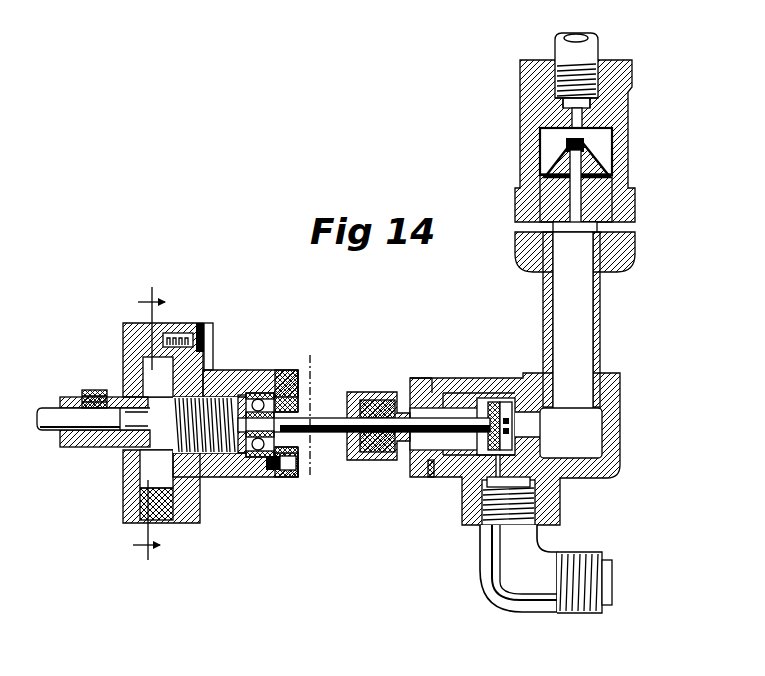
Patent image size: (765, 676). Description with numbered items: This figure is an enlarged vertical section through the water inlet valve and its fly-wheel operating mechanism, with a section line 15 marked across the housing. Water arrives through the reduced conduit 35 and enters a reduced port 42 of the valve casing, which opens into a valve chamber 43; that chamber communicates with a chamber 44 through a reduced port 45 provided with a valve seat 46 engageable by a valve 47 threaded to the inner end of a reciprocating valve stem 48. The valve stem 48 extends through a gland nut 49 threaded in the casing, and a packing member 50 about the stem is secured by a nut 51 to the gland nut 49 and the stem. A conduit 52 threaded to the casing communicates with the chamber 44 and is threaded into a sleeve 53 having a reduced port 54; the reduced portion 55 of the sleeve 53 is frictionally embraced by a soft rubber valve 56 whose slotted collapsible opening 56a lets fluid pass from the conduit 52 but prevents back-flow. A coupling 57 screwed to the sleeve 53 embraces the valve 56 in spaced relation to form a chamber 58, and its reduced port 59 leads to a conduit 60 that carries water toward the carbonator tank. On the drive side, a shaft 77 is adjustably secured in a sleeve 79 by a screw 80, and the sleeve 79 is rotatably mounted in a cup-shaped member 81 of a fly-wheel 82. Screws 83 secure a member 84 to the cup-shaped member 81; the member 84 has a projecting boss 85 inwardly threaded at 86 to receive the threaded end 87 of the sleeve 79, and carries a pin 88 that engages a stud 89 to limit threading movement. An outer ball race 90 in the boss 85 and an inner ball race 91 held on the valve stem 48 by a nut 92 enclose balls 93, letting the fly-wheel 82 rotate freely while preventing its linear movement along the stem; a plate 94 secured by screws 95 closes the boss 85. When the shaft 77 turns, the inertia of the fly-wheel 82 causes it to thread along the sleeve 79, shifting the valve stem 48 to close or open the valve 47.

The section line 15- 15 is at (128, 423).
The reduced conduit 35 is at (492, 540).
The reduced port 42 is at (463, 479).
The valve chamber 43 is at (480, 402).
The chamber 44 is at (617, 430).
The reduced port 45 is at (530, 428).
The valve seat 46 is at (502, 397).
The valve 47 is at (479, 388).
The valve stem 48 is at (342, 413).
The gland nut 49 is at (421, 376).
The packing member 50 is at (358, 462).
The nut 51 is at (369, 463).
The conduit 52 is at (576, 311).
The sleeve 53 is at (605, 235).
The reduced port 54 is at (573, 211).
The reduced portion 55 is at (600, 177).
The soft rubber valve 56 is at (578, 153).
The slotted collapsible opening 56a is at (582, 140).
The coupling 57 is at (629, 102).
The chamber 58 is at (550, 137).
The reduced port 59 is at (553, 107).
The conduit 60 is at (590, 50).
The shaft 77 is at (50, 408).
The sleeve 79 is at (65, 445).
The screw 80 is at (95, 392).
The cup-shaped member 81 is at (133, 480).
The fly-wheel 82 is at (170, 323).
The screws 83 is at (203, 323).
The member 84 is at (192, 522).
The projecting boss 85 is at (198, 472).
The threaded portion 86 is at (225, 468).
The threaded end 87 is at (206, 372).
The pin 88 is at (207, 352).
The stud 89 is at (150, 368).
The outer ball race 90 is at (254, 377).
The inner ball race 91 is at (282, 418).
The nut 92 is at (260, 368).
The balls 93 is at (273, 459).
The plate 94 is at (297, 384).
The screws 95 is at (288, 462).